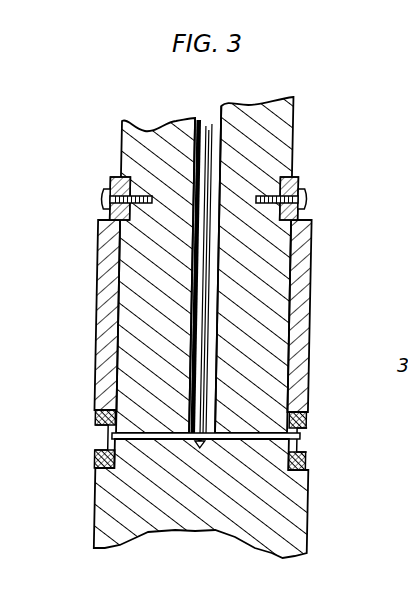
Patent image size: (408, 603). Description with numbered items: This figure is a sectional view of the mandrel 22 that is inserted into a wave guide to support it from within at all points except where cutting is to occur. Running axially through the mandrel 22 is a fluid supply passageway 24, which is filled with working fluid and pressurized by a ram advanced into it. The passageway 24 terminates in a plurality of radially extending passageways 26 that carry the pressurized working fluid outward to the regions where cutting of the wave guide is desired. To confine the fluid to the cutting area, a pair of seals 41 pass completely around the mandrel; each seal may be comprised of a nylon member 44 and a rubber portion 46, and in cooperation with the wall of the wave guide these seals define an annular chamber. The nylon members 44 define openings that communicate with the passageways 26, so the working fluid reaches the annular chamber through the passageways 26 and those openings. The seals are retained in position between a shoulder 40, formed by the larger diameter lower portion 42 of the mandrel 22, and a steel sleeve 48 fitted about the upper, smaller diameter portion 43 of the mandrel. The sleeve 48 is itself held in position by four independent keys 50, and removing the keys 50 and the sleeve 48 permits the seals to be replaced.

The mandrel 22 is at (314, 108).
The fluid supply passageway 24 is at (208, 118).
The radially extending passageways 26 is at (151, 437).
The shoulder 40 is at (98, 473).
The seals 41 is at (313, 434).
The lower portion 42 is at (95, 522).
The upper portion 43 is at (121, 148).
The nylon member 44 is at (306, 431).
The rubber portion 46 is at (305, 415).
The steel sleeve 48 is at (312, 287).
The keys 50 is at (300, 176).